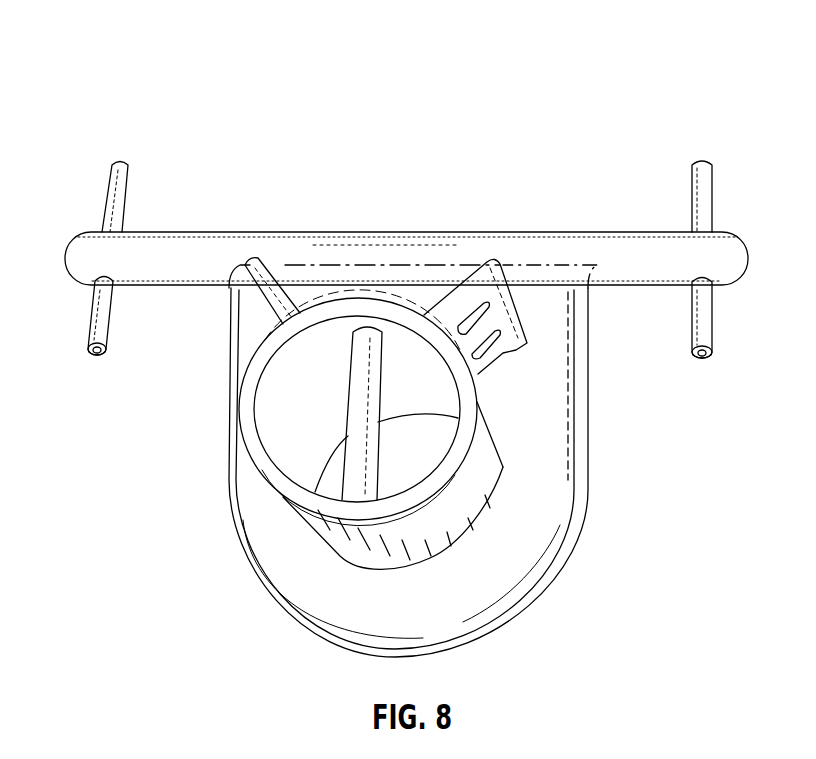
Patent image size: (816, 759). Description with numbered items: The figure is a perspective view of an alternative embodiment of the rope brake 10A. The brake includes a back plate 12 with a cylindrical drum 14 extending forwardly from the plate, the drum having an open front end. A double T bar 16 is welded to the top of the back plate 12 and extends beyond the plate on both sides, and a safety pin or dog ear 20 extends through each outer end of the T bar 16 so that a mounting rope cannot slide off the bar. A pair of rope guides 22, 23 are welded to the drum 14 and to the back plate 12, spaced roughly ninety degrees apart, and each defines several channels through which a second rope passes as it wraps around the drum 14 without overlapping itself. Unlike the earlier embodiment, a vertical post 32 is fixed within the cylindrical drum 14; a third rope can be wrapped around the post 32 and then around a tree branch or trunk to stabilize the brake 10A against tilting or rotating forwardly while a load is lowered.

The rope brake 10A is at (113, 60).
The back plate 12 is at (548, 464).
The cylindrical drum 14 is at (452, 507).
The double T bar 16 is at (395, 250).
The safety pin or dog ear 20 is at (118, 165).
The rope guide 22 is at (262, 300).
The rope guide 23 is at (513, 348).
The vertical post 32 is at (362, 415).